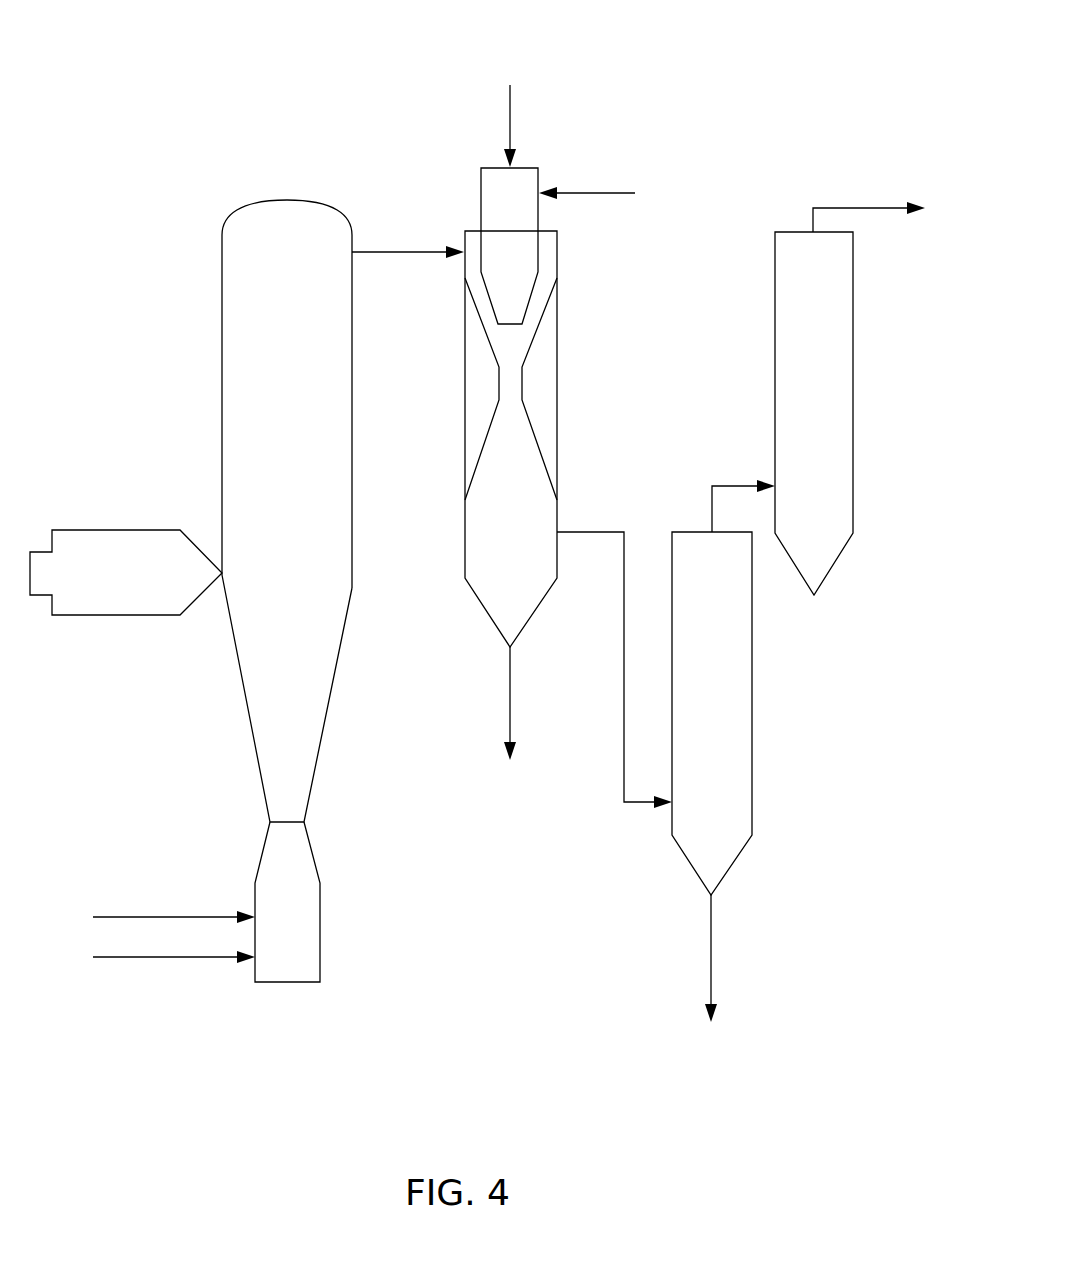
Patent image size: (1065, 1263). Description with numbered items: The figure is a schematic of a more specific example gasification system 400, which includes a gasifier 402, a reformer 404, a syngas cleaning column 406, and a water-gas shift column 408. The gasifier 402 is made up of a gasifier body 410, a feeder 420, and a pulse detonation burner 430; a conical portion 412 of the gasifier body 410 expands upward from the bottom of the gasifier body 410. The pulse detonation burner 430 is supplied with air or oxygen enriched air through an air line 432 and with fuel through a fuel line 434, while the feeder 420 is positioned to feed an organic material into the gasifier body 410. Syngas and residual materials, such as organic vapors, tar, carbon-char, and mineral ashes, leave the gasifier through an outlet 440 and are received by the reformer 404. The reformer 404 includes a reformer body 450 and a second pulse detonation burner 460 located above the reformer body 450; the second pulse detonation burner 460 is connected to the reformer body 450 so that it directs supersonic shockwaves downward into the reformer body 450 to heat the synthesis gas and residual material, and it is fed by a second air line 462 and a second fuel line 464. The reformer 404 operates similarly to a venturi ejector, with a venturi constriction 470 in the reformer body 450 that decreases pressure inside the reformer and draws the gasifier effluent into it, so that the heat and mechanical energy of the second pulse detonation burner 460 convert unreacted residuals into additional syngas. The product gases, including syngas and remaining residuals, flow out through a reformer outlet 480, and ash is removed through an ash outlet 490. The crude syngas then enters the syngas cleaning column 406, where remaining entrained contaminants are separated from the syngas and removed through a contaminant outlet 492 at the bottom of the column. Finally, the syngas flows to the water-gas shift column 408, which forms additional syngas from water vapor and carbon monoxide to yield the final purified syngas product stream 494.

The gasification system 400 is at (201, 50).
The gasifier 402 is at (205, 297).
The reformer 404 is at (578, 322).
The syngas cleaning column 406 is at (752, 705).
The water-gas shift column 408 is at (853, 515).
The gasifier body 410 is at (222, 380).
The conical portion 412 is at (328, 703).
The feeder 420 is at (105, 615).
The pulse detonation burner 430 is at (315, 863).
The air line 432 is at (115, 917).
The fuel line 434 is at (170, 957).
The outlet 440 is at (360, 253).
The reformer body 450 is at (557, 362).
The second pulse detonation burner 460 is at (481, 193).
The second air line 462 is at (577, 195).
The second fuel line 464 is at (510, 132).
The venturi constriction 470 is at (513, 403).
The reformer outlet 480 is at (577, 532).
The ash outlet 490 is at (510, 676).
The contaminant outlet 492 is at (711, 940).
The final purified syngas product stream 494 is at (857, 208).